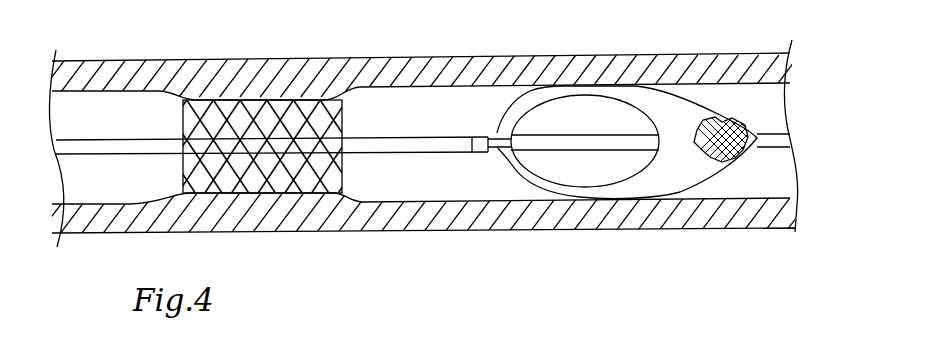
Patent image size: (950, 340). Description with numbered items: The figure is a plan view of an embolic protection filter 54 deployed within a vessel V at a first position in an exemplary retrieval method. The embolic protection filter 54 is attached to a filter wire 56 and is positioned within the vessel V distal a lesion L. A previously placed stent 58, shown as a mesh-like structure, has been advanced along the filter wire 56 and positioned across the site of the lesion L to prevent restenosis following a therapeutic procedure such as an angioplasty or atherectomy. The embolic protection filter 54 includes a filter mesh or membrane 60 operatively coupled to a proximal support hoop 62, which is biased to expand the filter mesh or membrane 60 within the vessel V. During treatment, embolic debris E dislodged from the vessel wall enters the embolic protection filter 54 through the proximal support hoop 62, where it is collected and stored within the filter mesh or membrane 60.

The vessel V is at (562, 67).
The lesion L is at (290, 75).
The embolic debris E is at (712, 125).
The embolic protection filter 54 is at (727, 100).
The filter wire 56 is at (105, 147).
The stent 58 is at (280, 182).
The filter mesh or membrane 60 is at (675, 182).
The proximal support hoop 62 is at (583, 190).